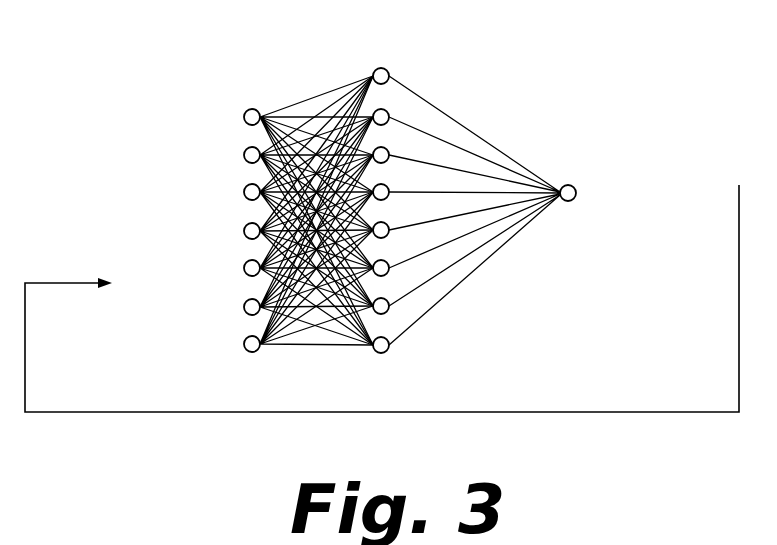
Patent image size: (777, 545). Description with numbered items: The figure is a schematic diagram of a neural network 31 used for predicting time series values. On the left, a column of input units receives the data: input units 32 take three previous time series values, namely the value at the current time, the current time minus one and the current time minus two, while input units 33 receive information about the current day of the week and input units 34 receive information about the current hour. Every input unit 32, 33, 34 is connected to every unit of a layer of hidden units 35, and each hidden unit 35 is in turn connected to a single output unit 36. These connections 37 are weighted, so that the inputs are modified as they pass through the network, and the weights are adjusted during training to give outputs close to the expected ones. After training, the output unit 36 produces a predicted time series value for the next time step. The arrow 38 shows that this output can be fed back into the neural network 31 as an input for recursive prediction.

The neural network 31 is at (296, 89).
The input units 32 is at (244, 272).
The input units 33 is at (245, 150).
The input units 34 is at (245, 228).
The hidden units 35 is at (388, 119).
The output unit 36 is at (572, 183).
The connections 37 is at (368, 322).
The arrow 38 is at (585, 412).